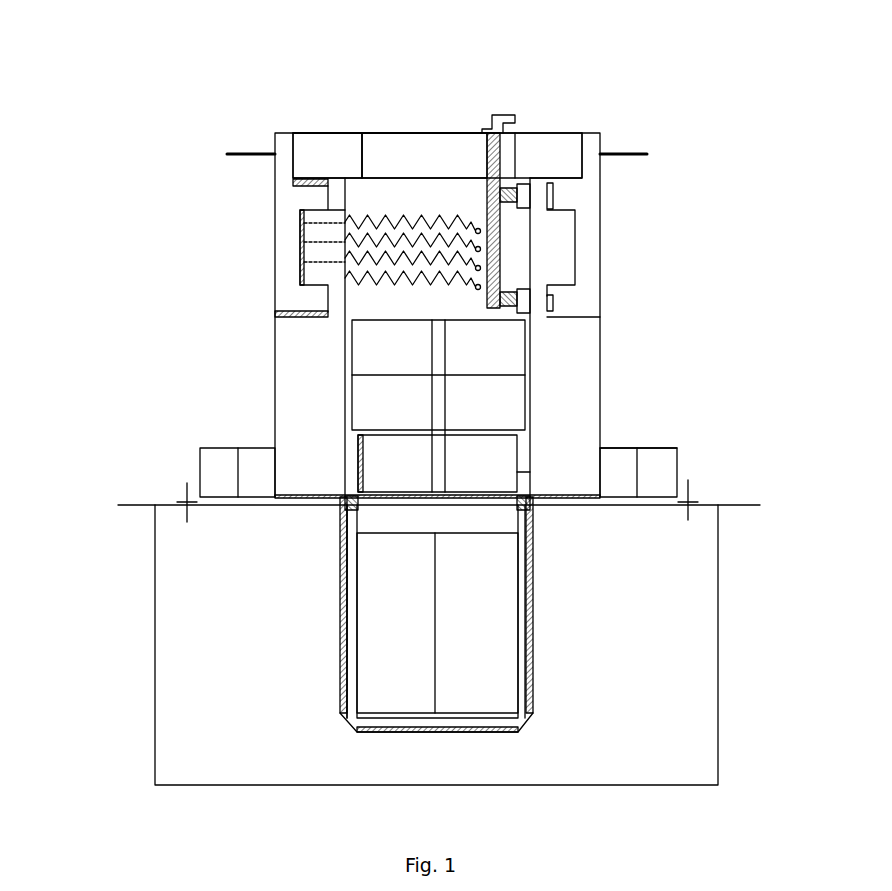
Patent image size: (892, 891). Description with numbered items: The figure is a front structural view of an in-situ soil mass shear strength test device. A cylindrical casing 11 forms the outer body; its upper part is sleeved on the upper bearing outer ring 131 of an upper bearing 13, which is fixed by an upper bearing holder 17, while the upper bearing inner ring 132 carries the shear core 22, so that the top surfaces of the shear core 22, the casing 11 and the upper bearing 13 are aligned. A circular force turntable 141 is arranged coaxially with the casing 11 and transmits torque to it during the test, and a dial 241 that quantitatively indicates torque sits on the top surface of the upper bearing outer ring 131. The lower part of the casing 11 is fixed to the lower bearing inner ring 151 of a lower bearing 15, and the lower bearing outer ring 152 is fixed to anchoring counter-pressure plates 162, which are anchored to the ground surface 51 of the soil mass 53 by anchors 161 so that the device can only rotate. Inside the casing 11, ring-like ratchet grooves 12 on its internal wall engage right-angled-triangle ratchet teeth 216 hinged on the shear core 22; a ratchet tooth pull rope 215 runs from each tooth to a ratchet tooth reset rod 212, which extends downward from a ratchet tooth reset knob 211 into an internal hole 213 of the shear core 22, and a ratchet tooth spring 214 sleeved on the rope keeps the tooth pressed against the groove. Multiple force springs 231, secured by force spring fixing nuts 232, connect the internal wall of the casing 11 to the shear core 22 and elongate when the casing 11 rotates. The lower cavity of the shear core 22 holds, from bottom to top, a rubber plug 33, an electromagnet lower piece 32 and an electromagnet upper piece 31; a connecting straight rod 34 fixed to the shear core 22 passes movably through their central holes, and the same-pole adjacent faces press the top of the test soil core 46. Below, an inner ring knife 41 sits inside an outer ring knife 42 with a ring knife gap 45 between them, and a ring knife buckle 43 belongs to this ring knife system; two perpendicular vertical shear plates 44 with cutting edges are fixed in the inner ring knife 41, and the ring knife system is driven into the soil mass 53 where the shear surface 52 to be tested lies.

The casing 11 is at (273, 410).
The ratchet groove 12 is at (317, 305).
The upper bearing 13 is at (537, 145).
The upper bearing outer ring 131 is at (300, 132).
The upper bearing inner ring 132 is at (380, 132).
The force turntable 141 is at (227, 154).
The lower bearing 15 is at (677, 457).
The lower bearing inner ring 151 is at (250, 448).
The lower bearing outer ring 152 is at (652, 448).
The anchor 161 is at (187, 483).
The anchoring counter-pressure plate 162 is at (170, 503).
The upper bearing holder 17 is at (580, 190).
The ratchet tooth reset knob 211 is at (515, 115).
The ratchet tooth reset rod 212 is at (597, 201).
The internal hole 213 is at (502, 167).
The ratchet tooth spring 214 is at (600, 153).
The ratchet tooth pull rope 215 is at (508, 278).
The ratchet tooth 216 is at (548, 312).
The shear core 22 is at (510, 250).
The force spring 231 is at (360, 275).
The force spring fixing nut 232 is at (478, 248).
The dial 241 is at (348, 132).
The electromagnet upper piece 31 is at (528, 360).
The electromagnet lower piece 32 is at (528, 405).
The rubber plug 33 is at (528, 472).
The connecting straight rod 34 is at (428, 397).
The inner ring knife 41 is at (525, 688).
The outer ring knife 42 is at (533, 650).
The ring knife buckle 43 is at (535, 500).
The vertical shear plate 44 is at (470, 533).
The ring knife gap 45 is at (347, 570).
The test soil core 46 is at (403, 625).
The ground surface 51 is at (730, 506).
The shear surface to be tested 52 is at (350, 722).
The soil mass to be tested 53 is at (697, 645).